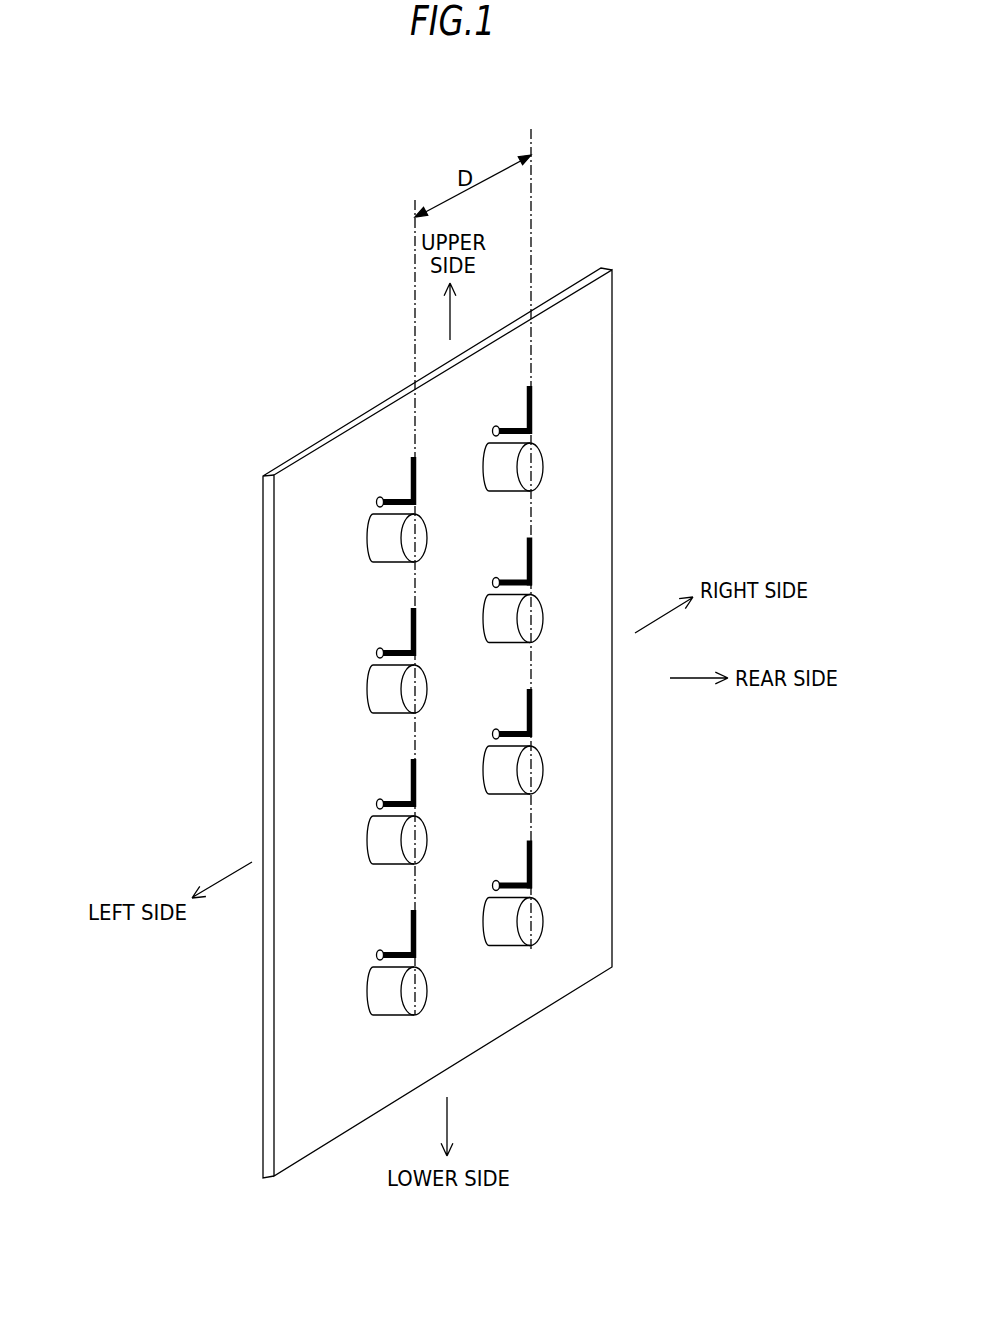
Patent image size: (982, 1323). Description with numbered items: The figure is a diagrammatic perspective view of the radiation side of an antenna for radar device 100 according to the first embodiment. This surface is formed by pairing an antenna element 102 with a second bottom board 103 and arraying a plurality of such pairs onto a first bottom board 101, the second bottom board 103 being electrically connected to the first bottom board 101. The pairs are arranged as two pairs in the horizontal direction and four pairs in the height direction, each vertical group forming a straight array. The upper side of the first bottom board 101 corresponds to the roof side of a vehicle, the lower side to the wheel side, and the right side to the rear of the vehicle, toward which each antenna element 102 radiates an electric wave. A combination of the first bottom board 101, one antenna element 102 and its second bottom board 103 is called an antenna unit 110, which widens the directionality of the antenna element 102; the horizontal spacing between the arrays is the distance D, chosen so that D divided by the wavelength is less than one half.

The antenna for radar device 100 is at (326, 263).
The first bottom board 101 is at (315, 465).
The antenna element 102 is at (533, 385).
The second bottom board 103 is at (510, 451).
The antenna unit 110 is at (356, 624).